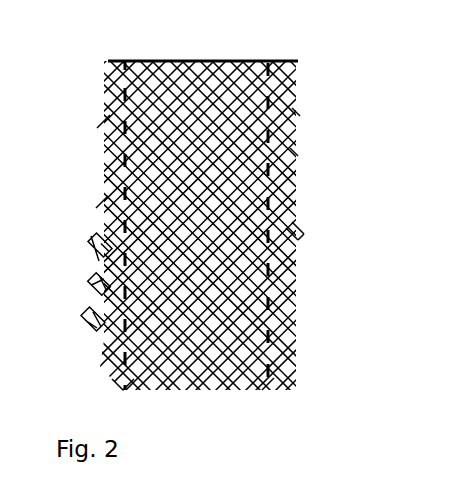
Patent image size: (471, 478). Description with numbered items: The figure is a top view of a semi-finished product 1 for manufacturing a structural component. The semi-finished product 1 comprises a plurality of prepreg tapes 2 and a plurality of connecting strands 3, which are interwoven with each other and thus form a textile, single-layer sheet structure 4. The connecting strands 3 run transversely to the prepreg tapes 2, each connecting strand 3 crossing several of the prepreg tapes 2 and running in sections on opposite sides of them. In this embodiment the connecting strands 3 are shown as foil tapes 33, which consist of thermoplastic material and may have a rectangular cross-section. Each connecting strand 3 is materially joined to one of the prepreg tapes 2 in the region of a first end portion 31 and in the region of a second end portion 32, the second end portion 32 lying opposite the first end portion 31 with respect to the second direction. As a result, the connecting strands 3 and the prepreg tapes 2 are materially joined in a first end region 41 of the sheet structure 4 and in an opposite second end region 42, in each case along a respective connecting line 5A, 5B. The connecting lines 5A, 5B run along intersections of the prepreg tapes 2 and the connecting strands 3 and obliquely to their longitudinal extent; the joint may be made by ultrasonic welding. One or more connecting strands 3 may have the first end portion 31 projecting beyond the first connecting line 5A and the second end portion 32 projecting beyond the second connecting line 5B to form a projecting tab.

The semi-finished product 1 is at (104, 30).
The prepreg tapes 2 is at (106, 126).
The connecting strands 3 is at (292, 152).
The sheet structure 4 is at (70, 54).
The first connecting line 5A is at (110, 80).
The second connecting line 5B is at (278, 68).
The first end portion 31 is at (80, 338).
The second end portion 32 is at (308, 226).
The foil tape 33 is at (292, 113).
The first end region 41 is at (116, 401).
The second end region 42 is at (279, 407).